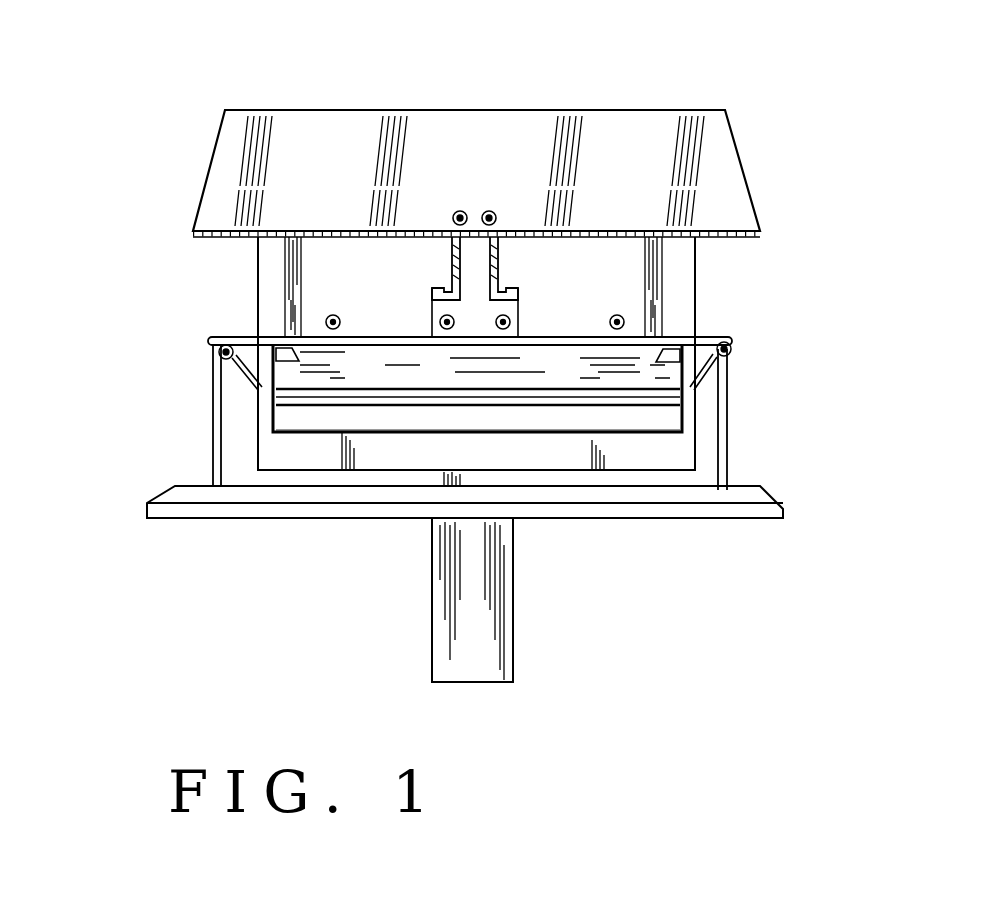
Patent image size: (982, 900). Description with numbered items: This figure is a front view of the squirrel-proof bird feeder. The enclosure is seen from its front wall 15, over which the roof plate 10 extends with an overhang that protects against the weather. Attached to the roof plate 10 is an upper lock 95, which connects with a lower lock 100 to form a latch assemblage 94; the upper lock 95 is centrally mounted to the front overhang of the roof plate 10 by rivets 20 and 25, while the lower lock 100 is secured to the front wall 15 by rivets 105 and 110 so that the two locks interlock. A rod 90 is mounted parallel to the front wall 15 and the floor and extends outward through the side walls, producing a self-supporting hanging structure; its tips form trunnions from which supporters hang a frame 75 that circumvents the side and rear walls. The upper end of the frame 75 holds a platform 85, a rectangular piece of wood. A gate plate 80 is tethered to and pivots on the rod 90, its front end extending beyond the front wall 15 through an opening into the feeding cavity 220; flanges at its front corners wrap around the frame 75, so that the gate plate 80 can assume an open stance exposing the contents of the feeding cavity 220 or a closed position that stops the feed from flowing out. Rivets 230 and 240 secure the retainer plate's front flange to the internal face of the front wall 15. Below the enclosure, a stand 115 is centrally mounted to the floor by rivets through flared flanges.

The roof plate 10 is at (527, 124).
The front wall 15 is at (262, 283).
The rivet 20 is at (493, 212).
The rivet 25 is at (456, 212).
The latch assemblage 94 is at (440, 262).
The upper lock 95 is at (498, 272).
The lower lock 100 is at (492, 310).
The rivet 105 is at (506, 330).
The rivet 110 is at (443, 329).
The rivet 230 is at (340, 316).
The rivet 240 is at (624, 320).
The frame 75 is at (729, 373).
The gate plate 80 is at (627, 378).
The rod 90 is at (335, 405).
The feeding cavity 220 is at (375, 420).
The platform 85 is at (242, 493).
The stand 115 is at (482, 602).